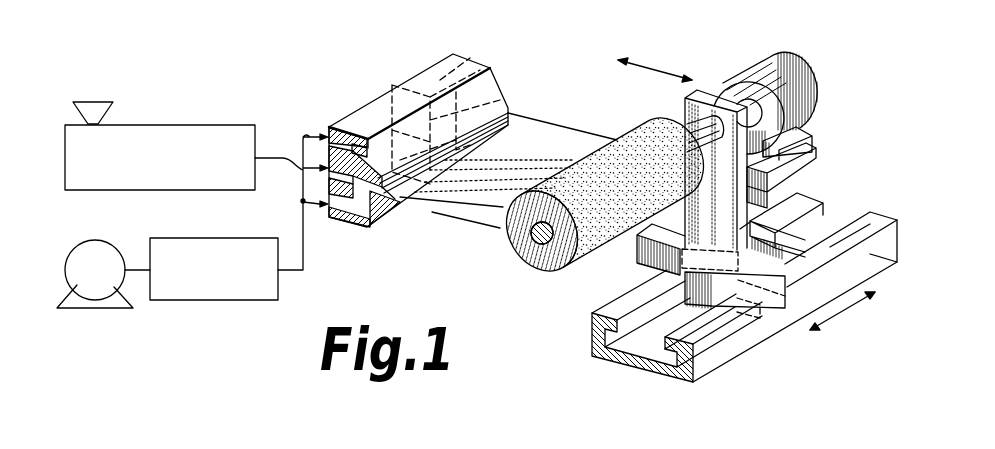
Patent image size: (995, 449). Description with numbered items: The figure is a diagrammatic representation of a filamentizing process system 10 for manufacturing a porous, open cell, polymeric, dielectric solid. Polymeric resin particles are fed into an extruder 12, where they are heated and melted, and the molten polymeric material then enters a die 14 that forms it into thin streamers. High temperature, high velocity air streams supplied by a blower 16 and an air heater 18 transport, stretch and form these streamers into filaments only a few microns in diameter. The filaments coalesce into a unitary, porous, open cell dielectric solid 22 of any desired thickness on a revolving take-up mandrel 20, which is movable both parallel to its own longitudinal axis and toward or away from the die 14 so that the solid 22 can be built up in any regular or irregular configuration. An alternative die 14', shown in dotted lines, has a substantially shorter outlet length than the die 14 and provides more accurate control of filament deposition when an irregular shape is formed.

The filamentizing process system 10 is at (264, 66).
The extruder 12 is at (186, 125).
The die 14 is at (418, 140).
The die 14' is at (453, 104).
The blower 16 is at (91, 298).
The air heater 18 is at (205, 300).
The take-up mandrel 20 is at (527, 258).
The dielectric solid 22 is at (530, 247).